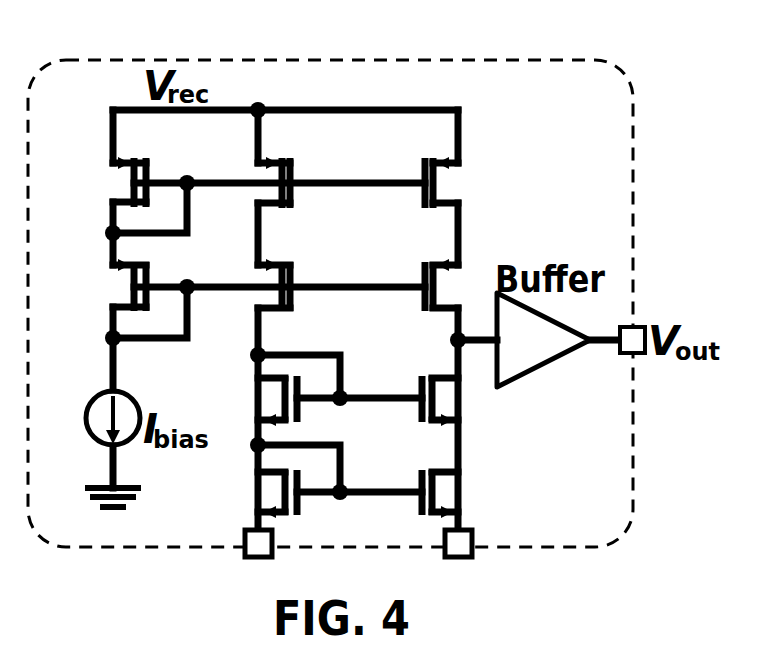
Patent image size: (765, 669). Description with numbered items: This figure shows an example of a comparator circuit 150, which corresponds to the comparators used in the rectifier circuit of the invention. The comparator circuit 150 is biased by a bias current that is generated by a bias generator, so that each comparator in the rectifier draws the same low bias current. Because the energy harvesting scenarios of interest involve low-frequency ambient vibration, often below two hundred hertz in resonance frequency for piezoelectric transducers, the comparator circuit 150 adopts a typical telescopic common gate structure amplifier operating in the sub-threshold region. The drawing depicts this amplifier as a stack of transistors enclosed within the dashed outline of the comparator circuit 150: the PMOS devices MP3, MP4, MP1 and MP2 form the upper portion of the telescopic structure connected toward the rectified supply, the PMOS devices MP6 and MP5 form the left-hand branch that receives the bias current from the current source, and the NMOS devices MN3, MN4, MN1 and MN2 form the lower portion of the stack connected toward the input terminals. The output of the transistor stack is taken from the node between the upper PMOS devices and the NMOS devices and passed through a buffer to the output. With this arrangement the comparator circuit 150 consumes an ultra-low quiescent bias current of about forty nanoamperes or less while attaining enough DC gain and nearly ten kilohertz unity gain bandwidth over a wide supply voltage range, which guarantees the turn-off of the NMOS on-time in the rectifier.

The comparator circuit 150 is at (539, 60).
The PMOS transistor MP1 is at (301, 263).
The PMOS transistor MP2 is at (415, 263).
The PMOS transistor MP3 is at (301, 161).
The PMOS transistor MP4 is at (415, 161).
The PMOS transistor MP5 is at (93, 285).
The PMOS transistor MP6 is at (93, 181).
The NMOS transistor MN1 is at (239, 499).
The NMOS transistor MN2 is at (483, 491).
The NMOS transistor MN3 is at (239, 398).
The NMOS transistor MN4 is at (483, 407).